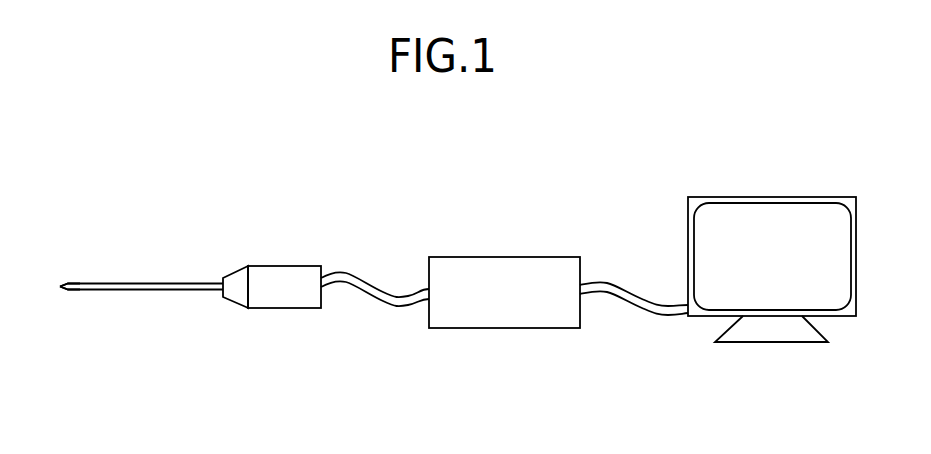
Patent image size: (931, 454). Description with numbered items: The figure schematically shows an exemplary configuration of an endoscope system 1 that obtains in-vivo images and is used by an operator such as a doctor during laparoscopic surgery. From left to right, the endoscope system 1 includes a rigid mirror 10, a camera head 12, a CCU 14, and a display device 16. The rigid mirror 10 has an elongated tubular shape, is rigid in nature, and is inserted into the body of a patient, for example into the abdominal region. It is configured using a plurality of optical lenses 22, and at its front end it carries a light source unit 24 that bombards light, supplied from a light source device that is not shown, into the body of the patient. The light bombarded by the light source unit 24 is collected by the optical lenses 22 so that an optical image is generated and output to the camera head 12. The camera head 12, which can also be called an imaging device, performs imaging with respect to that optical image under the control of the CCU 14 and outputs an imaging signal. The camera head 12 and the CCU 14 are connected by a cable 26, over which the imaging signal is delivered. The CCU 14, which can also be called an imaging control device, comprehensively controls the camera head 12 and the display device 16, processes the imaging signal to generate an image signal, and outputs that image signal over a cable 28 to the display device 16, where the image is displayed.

The endoscope system 1 is at (491, 156).
The rigid mirror 10 is at (152, 280).
The camera head 12 is at (287, 265).
The CCU (Camera Control Unit) 14 is at (512, 257).
The display device 16 is at (688, 225).
The optical lenses 22 is at (60, 284).
The light source unit 24 is at (60, 289).
The cable 26 is at (383, 291).
The cable 28 is at (635, 310).